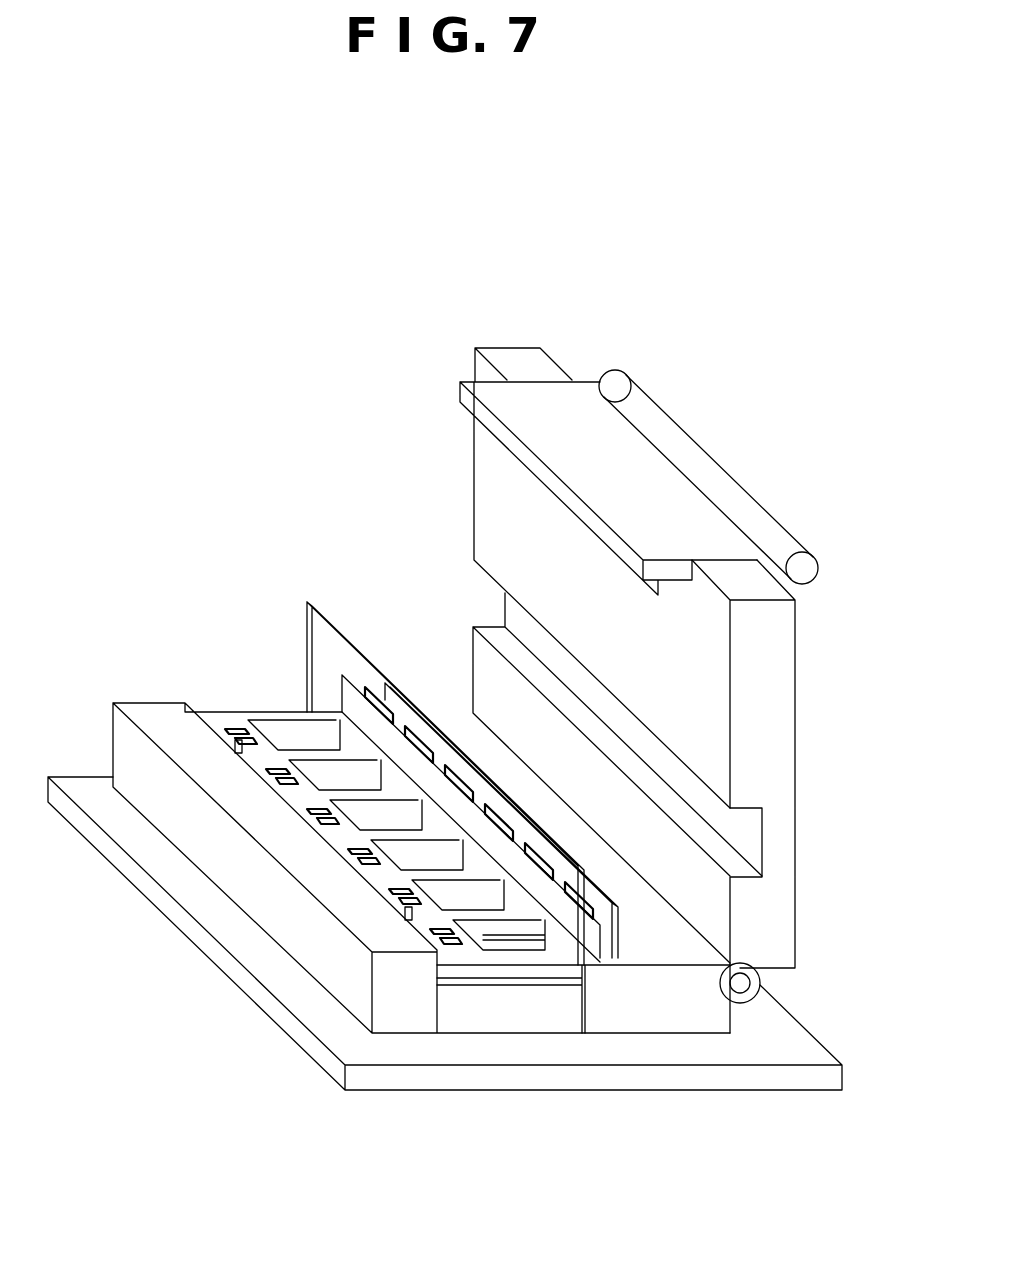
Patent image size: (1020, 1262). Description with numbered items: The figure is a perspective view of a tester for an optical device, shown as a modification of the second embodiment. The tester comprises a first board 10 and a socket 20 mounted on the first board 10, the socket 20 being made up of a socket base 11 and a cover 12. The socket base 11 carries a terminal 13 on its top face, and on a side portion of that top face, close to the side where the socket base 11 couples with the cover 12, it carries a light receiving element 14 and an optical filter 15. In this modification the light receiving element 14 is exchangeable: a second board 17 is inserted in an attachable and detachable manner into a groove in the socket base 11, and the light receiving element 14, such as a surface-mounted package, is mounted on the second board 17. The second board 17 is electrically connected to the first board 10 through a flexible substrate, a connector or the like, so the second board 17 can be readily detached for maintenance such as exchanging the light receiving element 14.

The first board 10 is at (223, 922).
The socket base 11 is at (162, 717).
The cover 12 is at (495, 488).
The terminal 13 is at (235, 727).
The light receiving element 14 is at (592, 925).
The optical filter 15 is at (568, 920).
The second board 17 is at (323, 642).
The socket 20 is at (800, 713).